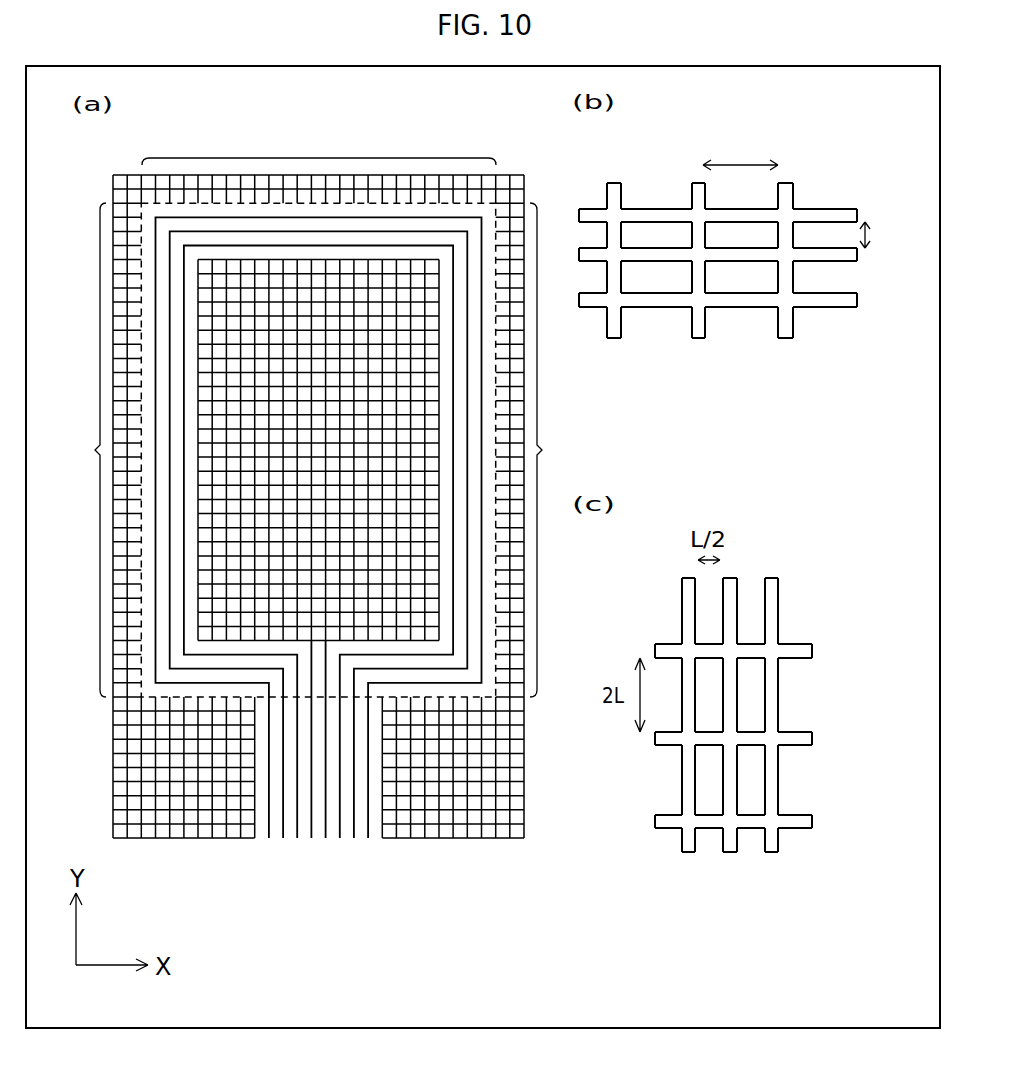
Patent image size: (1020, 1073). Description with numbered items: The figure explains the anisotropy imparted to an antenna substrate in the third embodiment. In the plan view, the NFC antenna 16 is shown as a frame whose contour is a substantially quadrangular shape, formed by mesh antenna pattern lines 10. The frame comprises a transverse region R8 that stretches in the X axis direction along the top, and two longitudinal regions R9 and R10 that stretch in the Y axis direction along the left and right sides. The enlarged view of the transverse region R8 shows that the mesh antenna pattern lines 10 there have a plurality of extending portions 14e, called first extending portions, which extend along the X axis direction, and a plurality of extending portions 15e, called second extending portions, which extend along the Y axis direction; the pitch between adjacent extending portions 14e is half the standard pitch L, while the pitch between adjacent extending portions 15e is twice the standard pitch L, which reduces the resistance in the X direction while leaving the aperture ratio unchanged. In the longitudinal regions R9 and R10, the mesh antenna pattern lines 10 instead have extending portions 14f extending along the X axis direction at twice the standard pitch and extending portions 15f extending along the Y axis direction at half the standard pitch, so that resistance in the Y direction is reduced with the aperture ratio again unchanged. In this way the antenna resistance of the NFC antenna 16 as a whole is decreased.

The mesh antenna pattern lines 10 is at (831, 167).
The extending portions (first extending portions) 14e is at (634, 293).
The extending portions (second extending portions) 15e is at (804, 354).
The extending portions (second extending portions) 14f is at (820, 801).
The extending portions (first extending portions) 15f is at (790, 868).
The NFC antenna 16 is at (196, 714).
The transverse region R8 is at (319, 147).
The longitudinal region R9 is at (87, 450).
The longitudinal region R10 is at (558, 450).